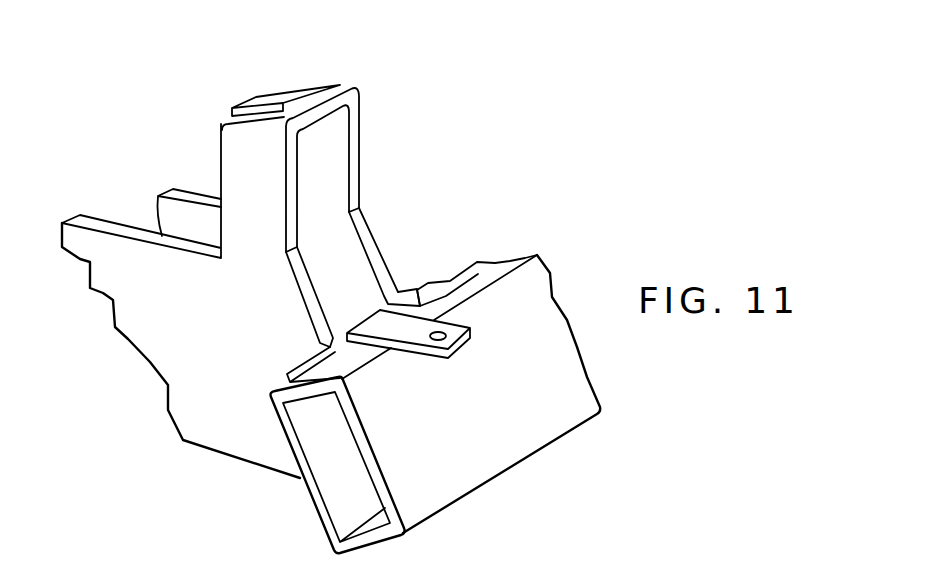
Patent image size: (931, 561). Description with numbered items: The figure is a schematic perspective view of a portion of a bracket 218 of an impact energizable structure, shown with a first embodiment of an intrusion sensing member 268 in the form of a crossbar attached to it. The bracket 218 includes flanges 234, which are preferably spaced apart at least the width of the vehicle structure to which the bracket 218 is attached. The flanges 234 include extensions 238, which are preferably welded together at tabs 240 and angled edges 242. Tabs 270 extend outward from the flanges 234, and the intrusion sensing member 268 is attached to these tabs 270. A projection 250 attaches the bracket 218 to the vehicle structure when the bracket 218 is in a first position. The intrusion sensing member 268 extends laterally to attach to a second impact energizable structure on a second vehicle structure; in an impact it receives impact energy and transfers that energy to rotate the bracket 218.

The bracket 218 is at (140, 355).
The flanges 234 is at (192, 192).
The extensions 238 is at (297, 184).
The tabs 240 is at (328, 107).
The angled edges 242 is at (313, 283).
The projection 250 is at (477, 268).
The intrusion sensing member 268 is at (508, 470).
The tabs 270 is at (297, 363).